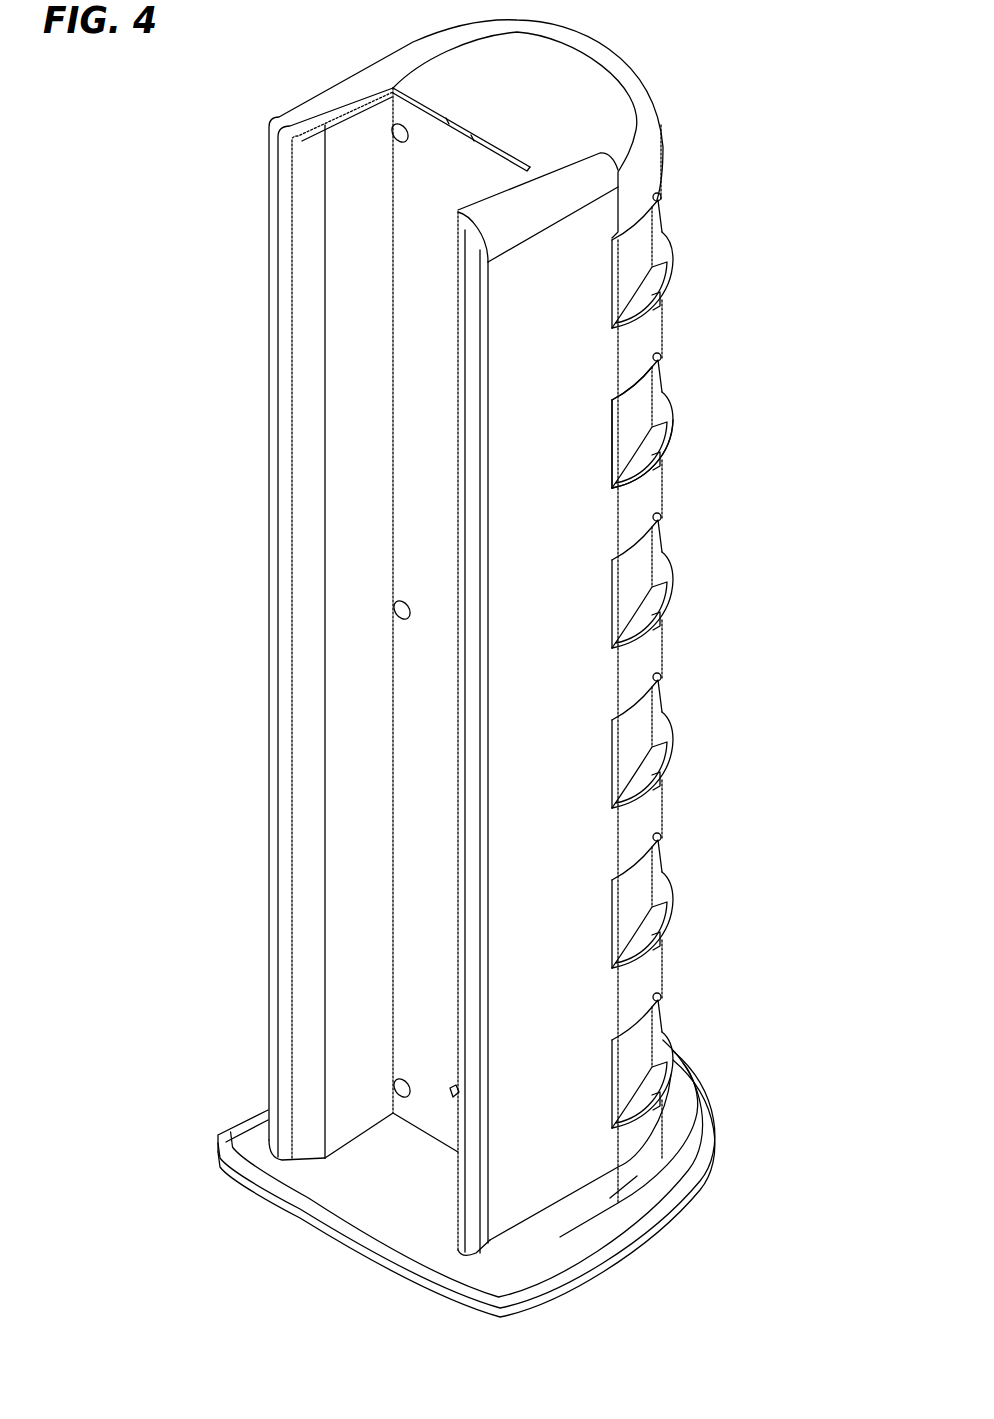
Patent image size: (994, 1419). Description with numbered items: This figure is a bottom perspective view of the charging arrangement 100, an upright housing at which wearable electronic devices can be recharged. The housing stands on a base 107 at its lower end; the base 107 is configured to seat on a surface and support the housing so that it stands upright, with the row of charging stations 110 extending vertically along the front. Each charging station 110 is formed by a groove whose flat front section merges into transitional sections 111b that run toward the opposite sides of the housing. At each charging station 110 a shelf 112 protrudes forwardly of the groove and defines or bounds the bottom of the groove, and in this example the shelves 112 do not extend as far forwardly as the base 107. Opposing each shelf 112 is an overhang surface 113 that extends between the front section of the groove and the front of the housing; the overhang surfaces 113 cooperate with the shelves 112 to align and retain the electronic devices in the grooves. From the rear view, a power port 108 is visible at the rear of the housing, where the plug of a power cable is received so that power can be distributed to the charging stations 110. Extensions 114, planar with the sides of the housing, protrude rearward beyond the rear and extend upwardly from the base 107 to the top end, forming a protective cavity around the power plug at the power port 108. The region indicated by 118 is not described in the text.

The charging arrangement 100 is at (479, 668).
The base 107 is at (665, 1147).
The power port 108 is at (453, 1094).
The charging station 110 is at (662, 236).
The transitional section 111b is at (625, 410).
The shelf 112 is at (657, 432).
The overhang surface 113 is at (425, 498).
The extension 114 is at (268, 346).
The channel 118 is at (405, 713).